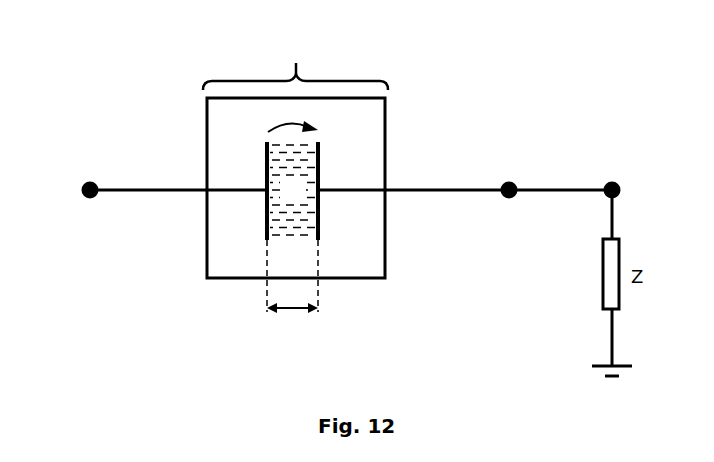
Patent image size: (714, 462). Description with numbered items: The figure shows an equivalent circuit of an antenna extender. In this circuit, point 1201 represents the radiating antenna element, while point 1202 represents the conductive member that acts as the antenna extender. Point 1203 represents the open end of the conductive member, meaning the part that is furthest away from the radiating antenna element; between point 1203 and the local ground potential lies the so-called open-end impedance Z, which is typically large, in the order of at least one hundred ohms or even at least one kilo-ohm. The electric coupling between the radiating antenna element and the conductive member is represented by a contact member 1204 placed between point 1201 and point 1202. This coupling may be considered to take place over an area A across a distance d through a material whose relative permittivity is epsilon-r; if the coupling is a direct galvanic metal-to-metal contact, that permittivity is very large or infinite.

The point representing the radiating antenna element 1201 is at (89, 183).
The point representing the conductive member 1202 is at (507, 183).
The point representing the open end of the conductive member 1203 is at (611, 183).
The contact member 1204 is at (295, 172).